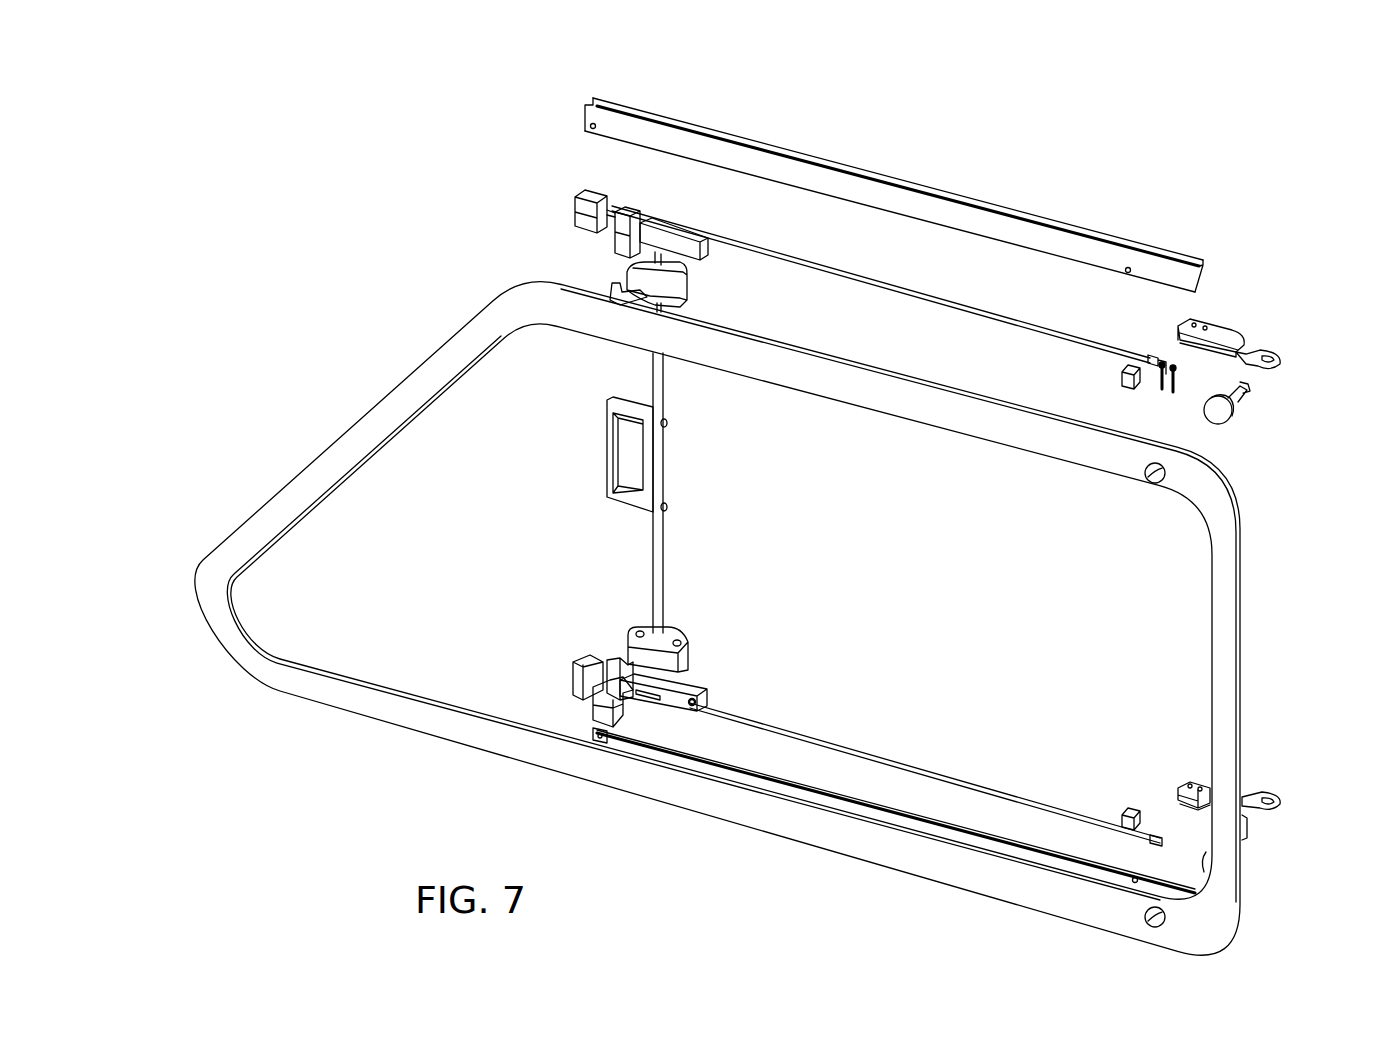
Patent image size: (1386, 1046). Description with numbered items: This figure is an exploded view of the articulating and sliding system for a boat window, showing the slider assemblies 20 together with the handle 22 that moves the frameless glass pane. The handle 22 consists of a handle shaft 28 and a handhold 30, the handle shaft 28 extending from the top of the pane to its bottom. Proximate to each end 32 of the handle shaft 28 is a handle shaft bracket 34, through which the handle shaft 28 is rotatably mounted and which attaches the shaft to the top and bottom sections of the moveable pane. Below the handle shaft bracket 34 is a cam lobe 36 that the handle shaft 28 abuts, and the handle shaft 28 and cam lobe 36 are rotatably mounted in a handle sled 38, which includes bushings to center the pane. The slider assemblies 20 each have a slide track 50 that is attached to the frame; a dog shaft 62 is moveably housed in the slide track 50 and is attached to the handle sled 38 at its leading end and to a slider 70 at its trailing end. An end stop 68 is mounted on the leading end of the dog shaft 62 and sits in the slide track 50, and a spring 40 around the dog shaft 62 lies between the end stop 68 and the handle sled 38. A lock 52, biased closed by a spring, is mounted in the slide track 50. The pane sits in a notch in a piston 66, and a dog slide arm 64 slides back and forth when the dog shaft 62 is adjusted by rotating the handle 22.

The slider assembly 20 is at (1003, 190).
The handle 22 is at (690, 510).
The handle shaft 28 is at (648, 388).
The handhold 30 is at (602, 455).
The end 32 is at (663, 693).
The handle shaft bracket 34 is at (689, 645).
The cam lobe 36 is at (600, 718).
The handle sled 38 is at (708, 700).
The spring 40 is at (667, 237).
The slide track 50 is at (773, 143).
The lock 52 is at (690, 705).
The dog shaft 62 is at (1000, 320).
The dog slide arm 64 is at (1282, 357).
The piston 66 is at (1230, 423).
The end stop 68 is at (577, 658).
The slider 70 is at (1230, 327).